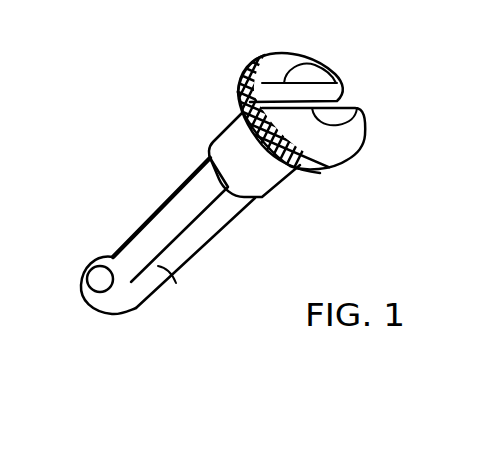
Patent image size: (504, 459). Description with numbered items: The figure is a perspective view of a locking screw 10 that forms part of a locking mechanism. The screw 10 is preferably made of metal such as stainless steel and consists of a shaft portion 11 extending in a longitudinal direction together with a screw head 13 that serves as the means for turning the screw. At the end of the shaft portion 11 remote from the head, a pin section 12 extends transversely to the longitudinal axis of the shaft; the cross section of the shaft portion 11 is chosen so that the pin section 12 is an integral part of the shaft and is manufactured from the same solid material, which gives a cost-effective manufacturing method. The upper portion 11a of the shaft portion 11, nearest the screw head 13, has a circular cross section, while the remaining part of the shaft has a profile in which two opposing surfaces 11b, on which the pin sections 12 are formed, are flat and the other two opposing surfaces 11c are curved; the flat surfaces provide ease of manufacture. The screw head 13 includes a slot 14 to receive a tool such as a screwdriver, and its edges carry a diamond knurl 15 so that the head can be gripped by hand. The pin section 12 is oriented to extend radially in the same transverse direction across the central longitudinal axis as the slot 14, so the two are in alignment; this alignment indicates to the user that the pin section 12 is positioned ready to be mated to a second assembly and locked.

The screw 10 is at (272, 234).
The shaft portion 11 is at (180, 225).
The upper portion 11a is at (268, 177).
The opposing surfaces 11b is at (198, 183).
The opposing surfaces 11c is at (142, 282).
The pin section 12 is at (114, 257).
The screw head 13 is at (317, 66).
The slot 14 is at (244, 80).
The diamond knurl 15 is at (350, 147).